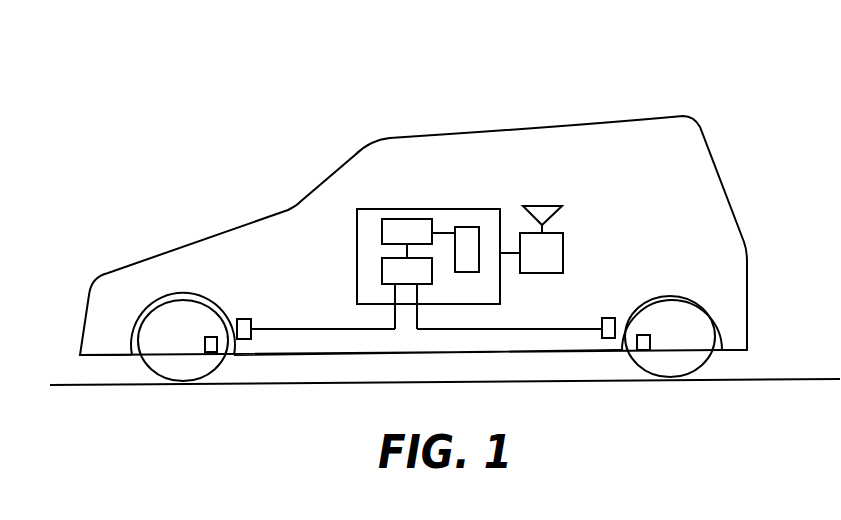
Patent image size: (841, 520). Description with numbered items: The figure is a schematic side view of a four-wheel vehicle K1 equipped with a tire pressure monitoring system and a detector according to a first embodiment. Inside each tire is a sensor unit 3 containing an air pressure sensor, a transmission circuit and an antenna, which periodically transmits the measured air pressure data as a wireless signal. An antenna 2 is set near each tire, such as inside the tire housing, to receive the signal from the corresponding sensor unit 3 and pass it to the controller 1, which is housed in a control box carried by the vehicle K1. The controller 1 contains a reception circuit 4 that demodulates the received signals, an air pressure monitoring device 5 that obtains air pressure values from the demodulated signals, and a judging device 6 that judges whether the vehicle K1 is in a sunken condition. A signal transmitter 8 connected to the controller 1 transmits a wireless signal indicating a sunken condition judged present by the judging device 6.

The vehicle K1 is at (657, 90).
The controller 1 is at (413, 208).
The antennas 2 is at (245, 318).
The sensor units 3 is at (205, 343).
The reception circuit 4 is at (382, 268).
The air pressure monitoring device 5 is at (387, 217).
The judging device 6 is at (472, 227).
The signal transmitter 8 is at (563, 245).